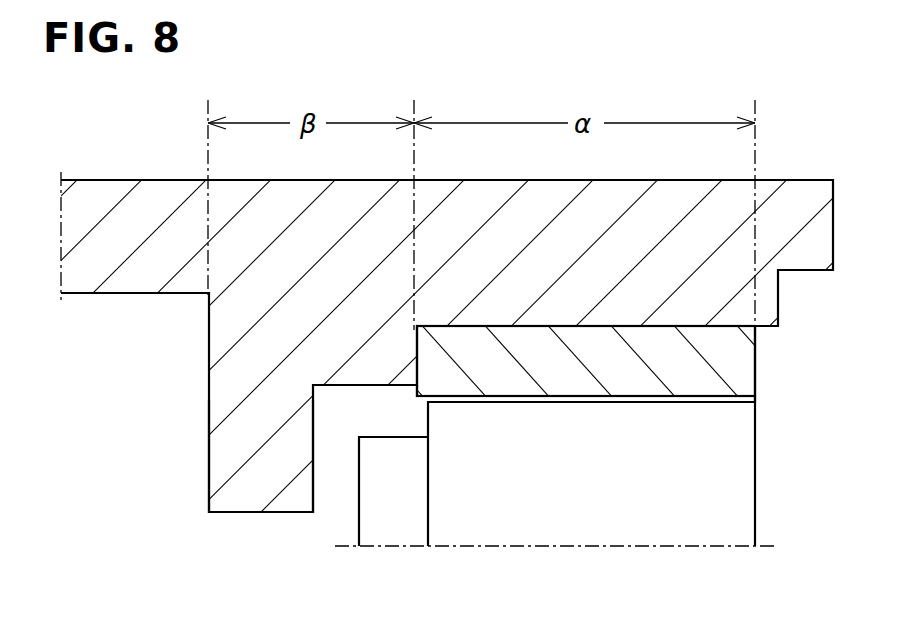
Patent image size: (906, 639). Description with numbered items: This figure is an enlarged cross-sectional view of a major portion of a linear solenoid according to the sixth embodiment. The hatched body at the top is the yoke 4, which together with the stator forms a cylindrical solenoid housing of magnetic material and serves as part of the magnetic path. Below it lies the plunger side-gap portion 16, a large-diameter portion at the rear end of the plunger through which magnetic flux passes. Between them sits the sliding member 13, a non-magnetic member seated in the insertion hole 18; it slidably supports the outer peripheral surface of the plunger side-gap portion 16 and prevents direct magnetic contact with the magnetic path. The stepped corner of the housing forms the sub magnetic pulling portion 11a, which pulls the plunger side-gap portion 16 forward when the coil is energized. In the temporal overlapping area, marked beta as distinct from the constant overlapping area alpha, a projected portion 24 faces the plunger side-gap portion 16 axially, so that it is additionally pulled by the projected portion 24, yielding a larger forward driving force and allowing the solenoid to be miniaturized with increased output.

The yoke 4 is at (145, 205).
The projected portion 24 is at (240, 490).
The sliding member 13 is at (728, 368).
The insertion hole 18 is at (658, 328).
The plunger side-gap portion 16 is at (720, 470).
The sub magnetic pulling portion 11a is at (415, 409).